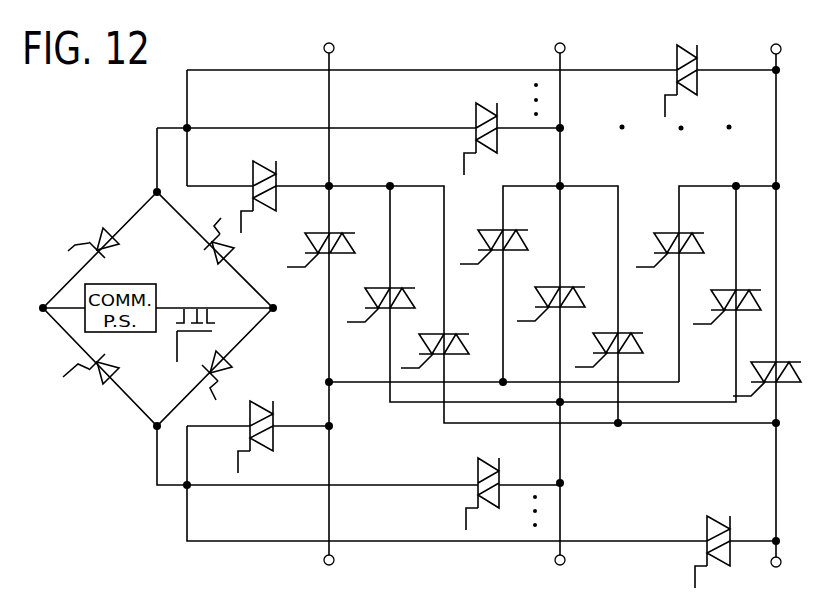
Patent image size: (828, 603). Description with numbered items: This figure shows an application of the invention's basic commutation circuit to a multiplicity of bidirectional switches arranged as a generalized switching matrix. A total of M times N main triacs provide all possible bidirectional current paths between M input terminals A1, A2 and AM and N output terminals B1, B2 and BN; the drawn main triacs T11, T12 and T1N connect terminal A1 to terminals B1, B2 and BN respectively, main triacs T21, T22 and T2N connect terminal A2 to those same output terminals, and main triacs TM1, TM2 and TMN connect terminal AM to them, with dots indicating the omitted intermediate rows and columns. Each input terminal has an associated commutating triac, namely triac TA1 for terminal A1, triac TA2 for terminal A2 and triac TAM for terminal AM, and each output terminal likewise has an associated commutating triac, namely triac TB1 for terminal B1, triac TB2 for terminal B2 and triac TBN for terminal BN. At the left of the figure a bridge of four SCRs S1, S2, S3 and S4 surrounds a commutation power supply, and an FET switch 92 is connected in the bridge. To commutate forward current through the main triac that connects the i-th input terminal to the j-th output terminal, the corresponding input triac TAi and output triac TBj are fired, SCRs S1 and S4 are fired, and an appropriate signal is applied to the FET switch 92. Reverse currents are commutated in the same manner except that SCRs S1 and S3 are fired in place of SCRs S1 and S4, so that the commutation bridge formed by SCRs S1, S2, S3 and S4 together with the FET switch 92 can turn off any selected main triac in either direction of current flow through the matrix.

The SCR S1 is at (92, 243).
The SCR S2 is at (96, 374).
The SCR S3 is at (204, 255).
The SCR S4 is at (236, 352).
The FET switch 92 is at (197, 309).
The triac TA1 is at (261, 186).
The triac TA2 is at (486, 128).
The triac TAM is at (701, 75).
The triac TB1 is at (258, 426).
The triac TB2 is at (489, 484).
The triac TBN is at (717, 540).
The main triac T11 is at (326, 237).
The main triac T12 is at (387, 293).
The main triac T1N is at (441, 339).
The main triac T21 is at (501, 236).
The main triac T22 is at (561, 292).
The main triac T2N is at (617, 338).
The main triac TM1 is at (677, 238).
The main triac TM2 is at (727, 295).
The main triac TMN is at (767, 367).
The terminal A1 is at (328, 36).
The terminal A2 is at (559, 36).
The terminal AM is at (777, 37).
The terminal B1 is at (339, 562).
The terminal B2 is at (572, 562).
The terminal BN is at (777, 573).